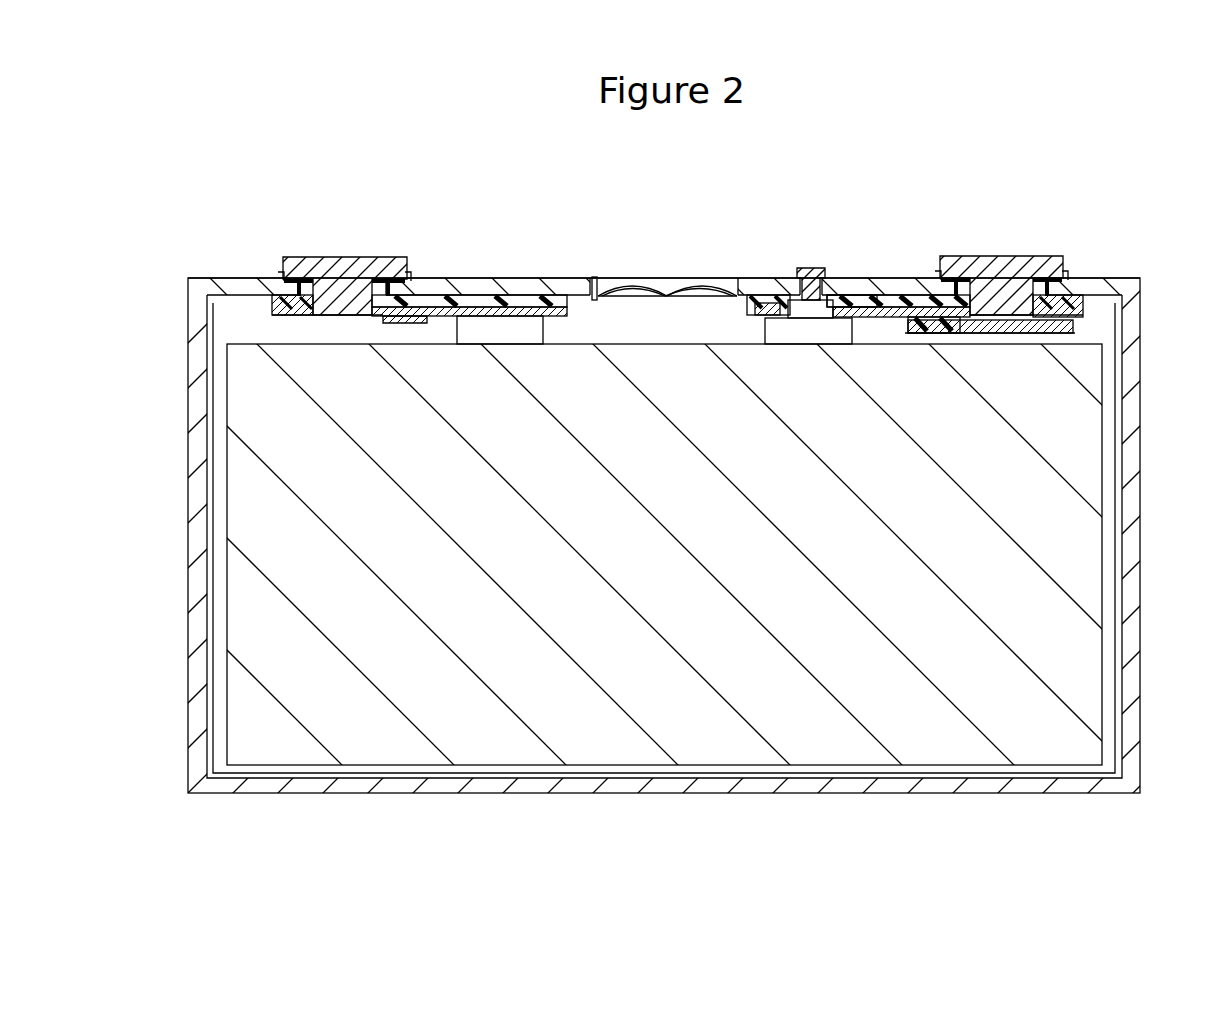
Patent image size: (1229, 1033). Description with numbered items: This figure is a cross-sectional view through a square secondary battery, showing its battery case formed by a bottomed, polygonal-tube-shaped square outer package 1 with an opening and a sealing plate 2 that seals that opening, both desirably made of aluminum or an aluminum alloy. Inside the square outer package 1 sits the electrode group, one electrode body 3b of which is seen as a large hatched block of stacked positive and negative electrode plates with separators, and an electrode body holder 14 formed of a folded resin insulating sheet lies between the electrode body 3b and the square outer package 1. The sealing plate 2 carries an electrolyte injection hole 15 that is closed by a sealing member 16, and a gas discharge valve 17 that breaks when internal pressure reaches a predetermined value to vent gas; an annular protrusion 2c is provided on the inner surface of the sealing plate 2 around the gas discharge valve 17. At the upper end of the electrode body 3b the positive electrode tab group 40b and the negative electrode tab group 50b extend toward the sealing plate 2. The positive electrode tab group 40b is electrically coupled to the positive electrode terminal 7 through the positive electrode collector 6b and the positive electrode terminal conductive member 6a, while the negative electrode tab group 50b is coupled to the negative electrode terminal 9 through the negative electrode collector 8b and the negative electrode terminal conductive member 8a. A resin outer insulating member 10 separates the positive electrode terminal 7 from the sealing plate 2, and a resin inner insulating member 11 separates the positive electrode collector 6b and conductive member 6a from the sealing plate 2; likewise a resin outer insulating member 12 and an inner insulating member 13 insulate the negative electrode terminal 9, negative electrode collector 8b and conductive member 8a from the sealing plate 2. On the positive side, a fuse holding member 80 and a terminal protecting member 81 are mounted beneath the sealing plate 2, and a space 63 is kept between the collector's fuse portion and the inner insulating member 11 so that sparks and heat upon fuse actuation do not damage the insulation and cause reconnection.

The square outer package 1 is at (1132, 572).
The sealing plate 2 is at (568, 286).
The annular protrusion 2c is at (596, 292).
The electrode body 3b is at (245, 688).
The positive electrode terminal conductive member 6a is at (1080, 308).
The positive electrode collector 6b is at (905, 305).
The positive electrode terminal 7 is at (1005, 268).
The negative electrode terminal conductive member 8a is at (292, 315).
The negative electrode collector 8b is at (452, 298).
The negative electrode terminal 9 is at (355, 262).
The outer insulating member 10 is at (1068, 270).
The inner insulating member 11 is at (862, 300).
The outer insulating member 12 is at (283, 275).
The inner insulating member 13 is at (537, 300).
The electrode body holder 14 is at (1118, 637).
The electrolyte injection hole 15 is at (796, 298).
The sealing member 16 is at (812, 272).
The gas discharge valve 17 is at (642, 290).
The positive electrode tab group 40b is at (760, 310).
The negative electrode tab group 50b is at (497, 333).
The space 63 is at (925, 325).
The fuse holding member 80 is at (922, 343).
The terminal protecting member 81 is at (985, 333).